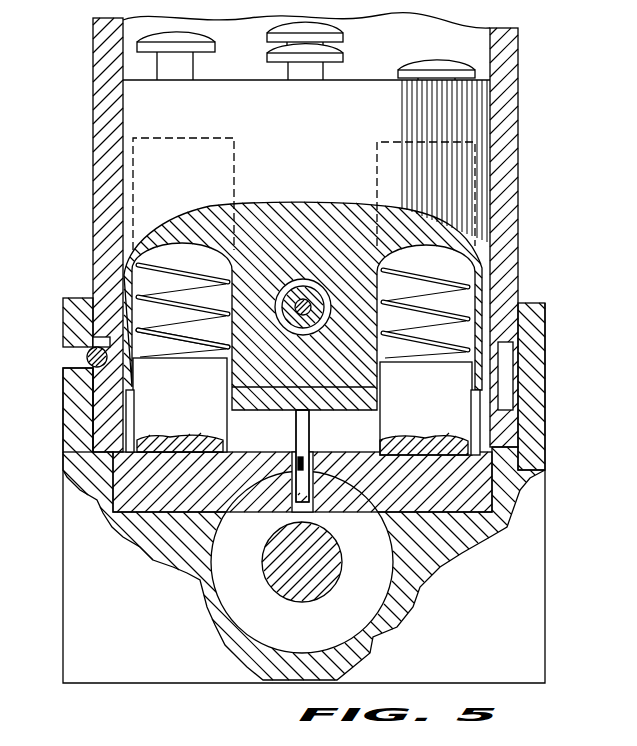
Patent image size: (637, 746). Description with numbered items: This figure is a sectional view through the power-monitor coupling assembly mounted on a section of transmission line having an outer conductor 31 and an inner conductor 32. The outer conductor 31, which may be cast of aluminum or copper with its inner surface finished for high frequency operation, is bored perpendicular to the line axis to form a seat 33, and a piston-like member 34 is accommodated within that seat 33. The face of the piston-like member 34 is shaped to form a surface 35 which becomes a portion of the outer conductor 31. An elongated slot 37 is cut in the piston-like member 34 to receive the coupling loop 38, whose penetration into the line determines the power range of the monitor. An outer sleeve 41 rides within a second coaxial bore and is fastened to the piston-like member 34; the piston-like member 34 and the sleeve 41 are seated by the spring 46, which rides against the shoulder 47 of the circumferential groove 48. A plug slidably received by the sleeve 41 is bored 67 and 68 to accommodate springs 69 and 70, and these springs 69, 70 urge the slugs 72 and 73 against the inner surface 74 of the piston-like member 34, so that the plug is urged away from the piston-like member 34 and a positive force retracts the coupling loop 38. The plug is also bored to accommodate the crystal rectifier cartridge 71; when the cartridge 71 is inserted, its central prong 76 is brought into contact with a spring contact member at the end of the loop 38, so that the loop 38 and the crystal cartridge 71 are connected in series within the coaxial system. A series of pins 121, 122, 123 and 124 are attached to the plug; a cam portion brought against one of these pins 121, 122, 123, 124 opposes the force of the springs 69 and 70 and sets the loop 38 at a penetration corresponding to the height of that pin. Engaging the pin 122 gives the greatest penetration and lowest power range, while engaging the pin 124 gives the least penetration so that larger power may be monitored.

The outer conductor 31 is at (523, 558).
The inner conductor 32 is at (317, 592).
The seat 33 is at (123, 537).
The piston-like member 34 is at (191, 491).
The surface 35 is at (237, 502).
The elongated slot 37 is at (297, 473).
The coupling loop 38 is at (310, 488).
The outer sleeve 41 is at (105, 115).
The spring 46 is at (83, 357).
The shoulder 47 is at (100, 370).
The circumferential groove 48 is at (107, 340).
The bore 67 is at (150, 302).
The bore 68 is at (467, 325).
The spring 69 is at (148, 295).
The spring 70 is at (447, 308).
The crystal rectifier cartridge 71 is at (312, 299).
The slug 72 is at (191, 403).
The slug 73 is at (432, 408).
The inner surface 74 is at (178, 451).
The central prong 76 is at (297, 297).
The pin 121 is at (278, 36).
The pin 122 is at (207, 48).
The pin 123 is at (343, 60).
The pin 124 is at (415, 62).